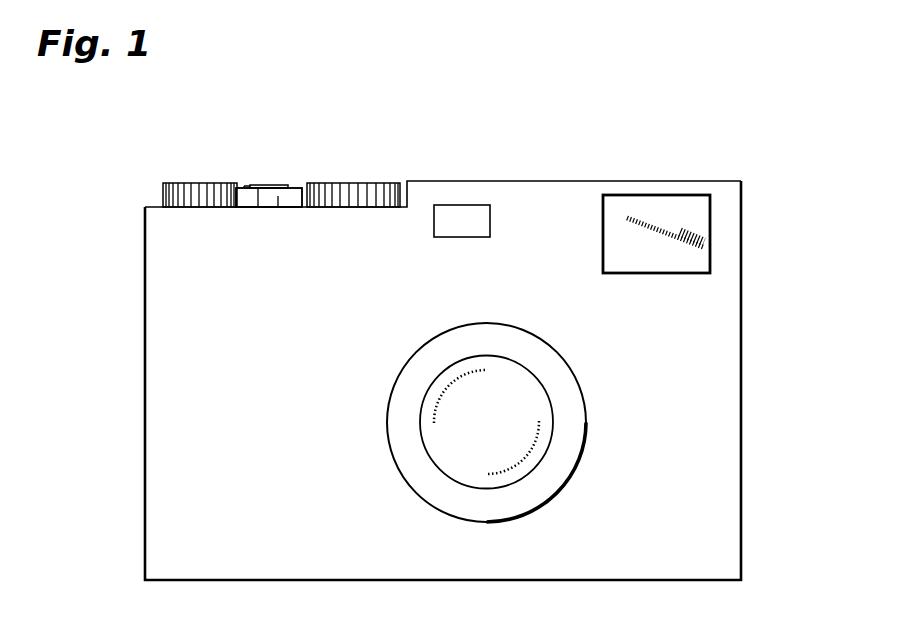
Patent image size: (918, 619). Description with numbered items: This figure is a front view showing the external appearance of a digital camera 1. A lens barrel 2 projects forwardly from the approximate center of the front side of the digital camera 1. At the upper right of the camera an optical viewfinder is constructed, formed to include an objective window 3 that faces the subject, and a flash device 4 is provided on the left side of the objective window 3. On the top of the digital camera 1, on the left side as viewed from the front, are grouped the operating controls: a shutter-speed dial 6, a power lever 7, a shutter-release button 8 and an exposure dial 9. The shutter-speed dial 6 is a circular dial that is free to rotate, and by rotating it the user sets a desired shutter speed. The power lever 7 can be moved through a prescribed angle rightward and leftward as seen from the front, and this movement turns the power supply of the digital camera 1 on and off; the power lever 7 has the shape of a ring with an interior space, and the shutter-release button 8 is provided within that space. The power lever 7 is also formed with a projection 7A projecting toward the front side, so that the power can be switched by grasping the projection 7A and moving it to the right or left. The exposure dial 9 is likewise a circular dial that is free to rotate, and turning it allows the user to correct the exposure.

The digital camera 1 is at (762, 118).
The lens barrel 2 is at (586, 433).
The objective window 3 is at (640, 267).
The flash device 4 is at (465, 223).
The shutter-speed dial 6 is at (357, 190).
The power lever 7 is at (293, 187).
The projection 7A is at (270, 197).
The shutter-release button 8 is at (270, 185).
The exposure dial 9 is at (202, 191).